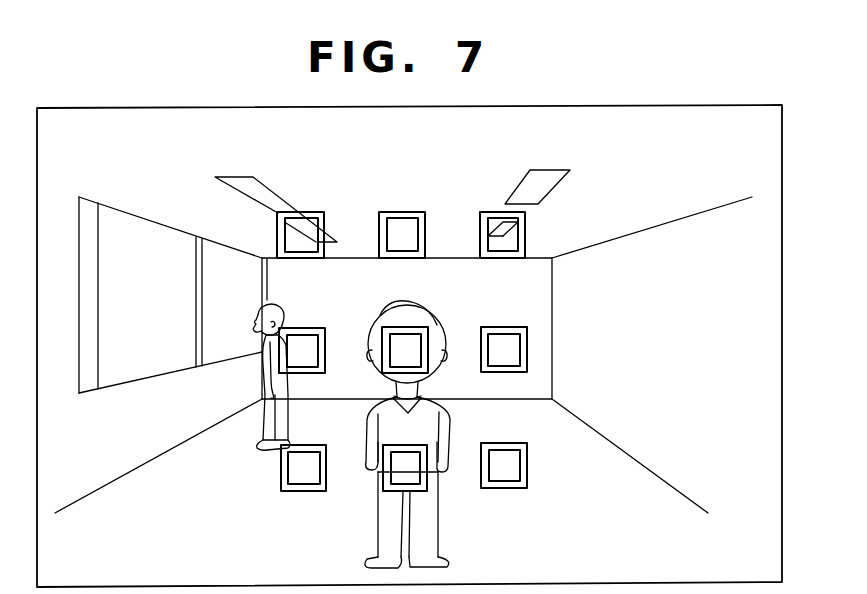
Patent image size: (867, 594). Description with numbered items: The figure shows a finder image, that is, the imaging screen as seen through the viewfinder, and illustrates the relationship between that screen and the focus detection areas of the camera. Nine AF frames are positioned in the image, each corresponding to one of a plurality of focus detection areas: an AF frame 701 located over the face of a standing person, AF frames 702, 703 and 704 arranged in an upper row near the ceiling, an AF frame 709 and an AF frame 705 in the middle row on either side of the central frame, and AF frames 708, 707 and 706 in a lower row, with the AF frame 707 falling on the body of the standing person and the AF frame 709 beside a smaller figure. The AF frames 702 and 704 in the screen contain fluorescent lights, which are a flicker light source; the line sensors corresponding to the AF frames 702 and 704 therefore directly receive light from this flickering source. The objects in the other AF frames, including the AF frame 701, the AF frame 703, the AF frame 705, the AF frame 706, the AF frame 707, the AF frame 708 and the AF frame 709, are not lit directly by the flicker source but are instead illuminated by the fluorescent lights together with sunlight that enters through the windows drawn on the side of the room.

The AF frame 701 is at (392, 327).
The AF frame 702 is at (301, 212).
The AF frame 703 is at (405, 212).
The AF frame 704 is at (483, 212).
The AF frame 705 is at (508, 327).
The AF frame 706 is at (513, 488).
The AF frame 707 is at (393, 492).
The AF frame 708 is at (288, 492).
The AF frame 709 is at (306, 328).